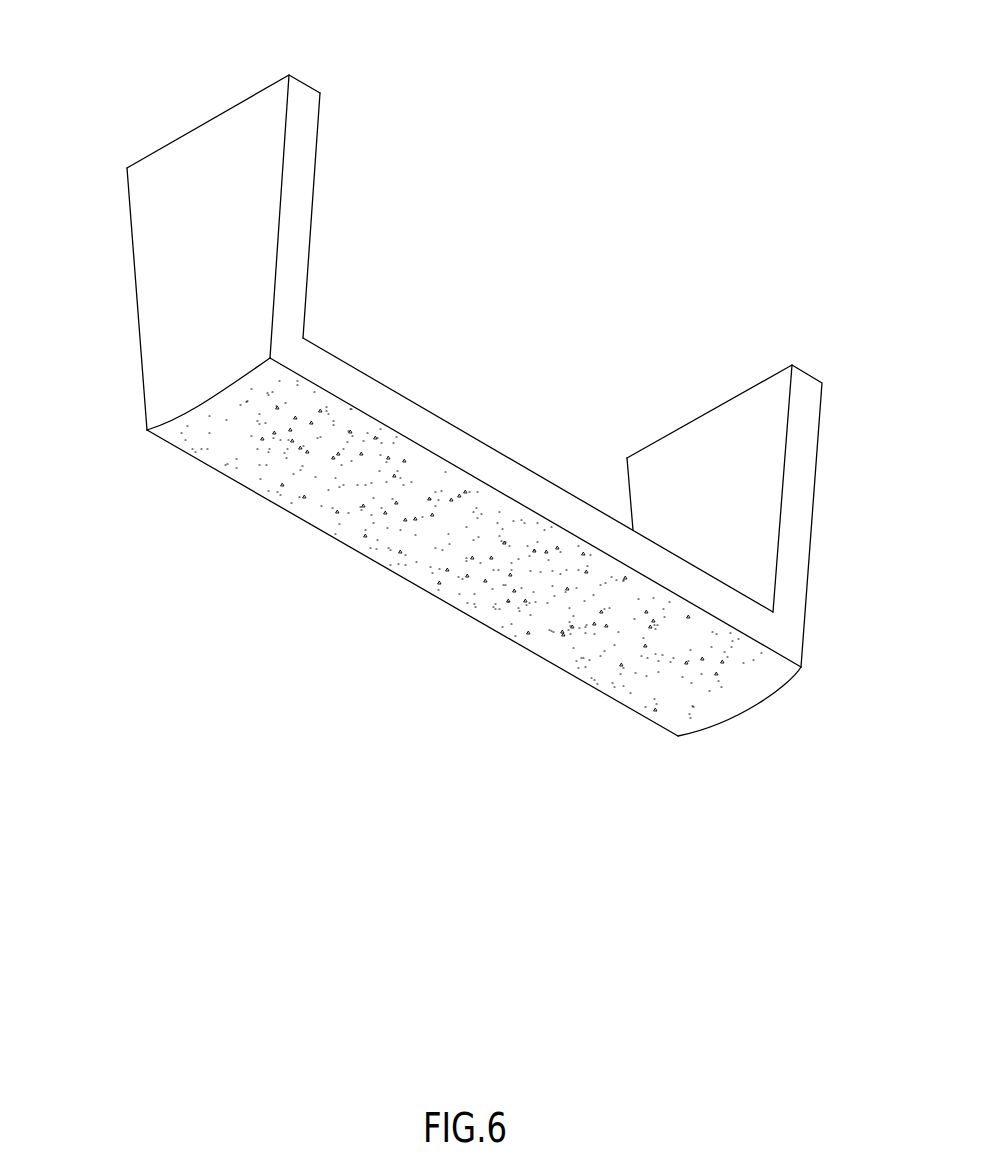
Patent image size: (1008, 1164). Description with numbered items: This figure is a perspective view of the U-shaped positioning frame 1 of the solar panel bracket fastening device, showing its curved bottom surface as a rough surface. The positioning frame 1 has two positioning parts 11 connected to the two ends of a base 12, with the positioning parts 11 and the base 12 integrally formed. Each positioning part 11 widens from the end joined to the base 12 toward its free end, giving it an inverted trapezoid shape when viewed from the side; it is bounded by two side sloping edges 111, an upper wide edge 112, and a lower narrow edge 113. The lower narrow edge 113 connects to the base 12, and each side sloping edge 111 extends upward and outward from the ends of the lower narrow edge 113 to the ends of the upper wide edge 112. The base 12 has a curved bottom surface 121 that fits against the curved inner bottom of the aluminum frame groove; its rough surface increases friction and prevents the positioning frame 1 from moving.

The positioning frame 1 is at (604, 341).
The positioning part 11 is at (170, 290).
The side sloping edge 111 is at (300, 212).
The upper wide edge 112 is at (197, 128).
The lower narrow edge 113 is at (203, 412).
The base 12 is at (458, 412).
The curved bottom surface 121 is at (385, 520).